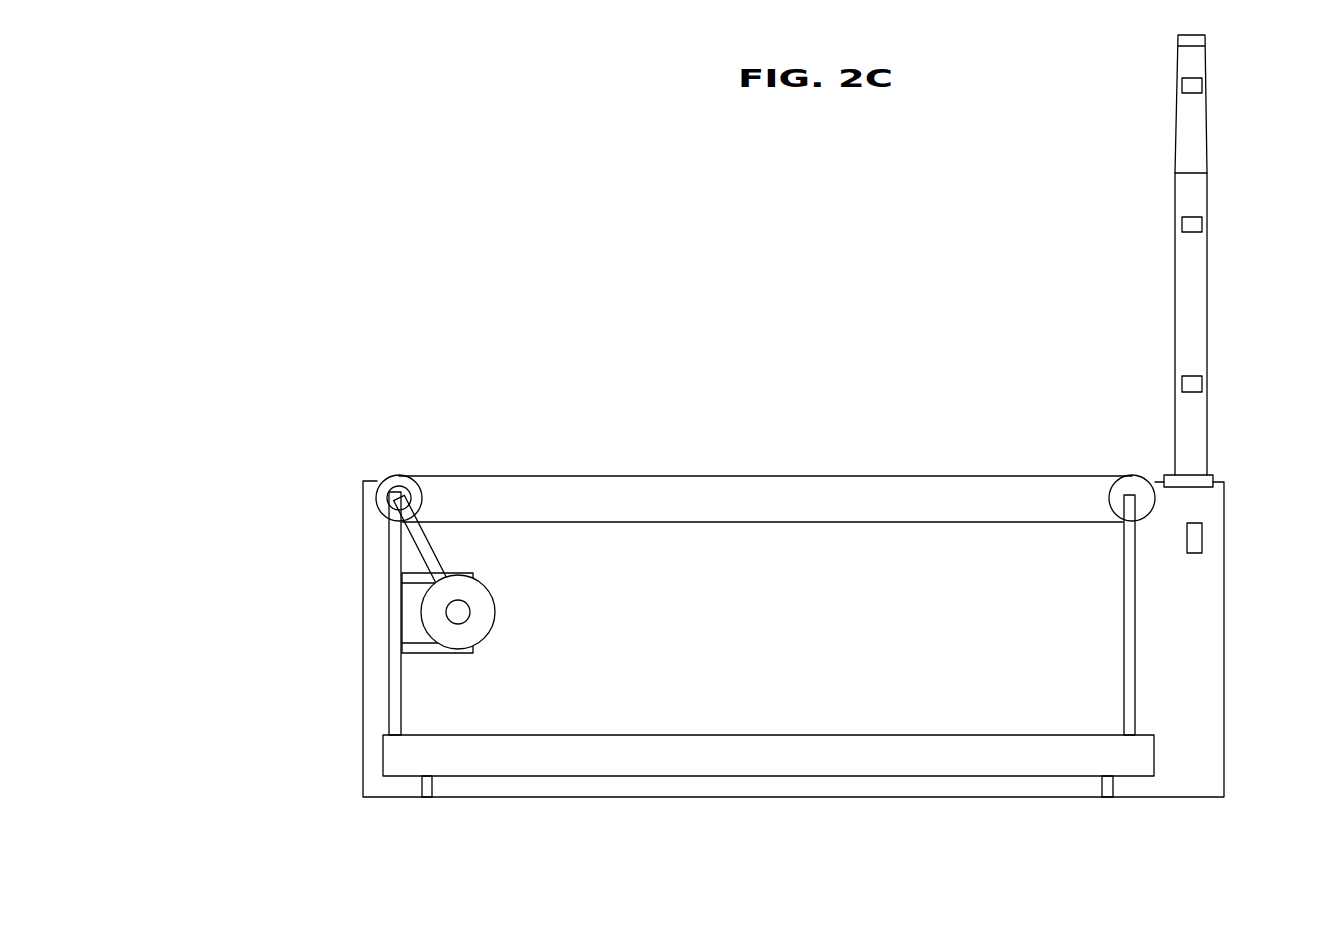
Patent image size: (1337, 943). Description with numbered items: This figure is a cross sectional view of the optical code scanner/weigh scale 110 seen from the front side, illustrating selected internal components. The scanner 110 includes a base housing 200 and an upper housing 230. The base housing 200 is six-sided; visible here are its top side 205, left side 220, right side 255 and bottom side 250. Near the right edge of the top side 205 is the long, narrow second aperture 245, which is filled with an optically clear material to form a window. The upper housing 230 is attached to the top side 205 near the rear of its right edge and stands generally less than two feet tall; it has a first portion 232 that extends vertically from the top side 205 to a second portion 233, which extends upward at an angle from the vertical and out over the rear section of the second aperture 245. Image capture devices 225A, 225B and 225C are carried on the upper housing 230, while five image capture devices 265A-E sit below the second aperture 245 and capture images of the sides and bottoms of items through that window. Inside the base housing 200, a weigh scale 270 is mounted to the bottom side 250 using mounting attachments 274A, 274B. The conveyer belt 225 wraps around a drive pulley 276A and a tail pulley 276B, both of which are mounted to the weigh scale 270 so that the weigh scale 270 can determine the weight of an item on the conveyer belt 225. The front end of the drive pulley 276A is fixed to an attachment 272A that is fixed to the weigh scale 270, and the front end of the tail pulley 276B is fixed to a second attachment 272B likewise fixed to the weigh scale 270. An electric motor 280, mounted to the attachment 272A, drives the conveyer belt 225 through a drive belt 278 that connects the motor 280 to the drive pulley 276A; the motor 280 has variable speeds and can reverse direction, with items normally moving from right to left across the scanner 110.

The optical code scanner/weigh scale 110 is at (572, 181).
The base housing 200 is at (301, 676).
The top side 205 is at (363, 480).
The left side 220 is at (363, 615).
The conveyer belt 225 is at (598, 475).
The image capture device 225A is at (1195, 384).
The image capture device 225B is at (1195, 224).
The image capture device 225C is at (1195, 85).
The upper housing 230 is at (1105, 230).
The first portion 232 is at (1175, 323).
The second portion 233 is at (1175, 115).
The second aperture 245 is at (1212, 475).
The bottom side 250 is at (718, 798).
The right side 255 is at (1225, 697).
The image capture devices 265A-E is at (1197, 533).
The weigh scale 270 is at (400, 757).
The attachment 272A is at (389, 553).
The second attachment 272B is at (1135, 606).
The mounting attachment 274A is at (423, 798).
The mounting attachment 274B is at (1107, 798).
The drive pulley 276A is at (404, 478).
The tail pulley 276B is at (1128, 483).
The drive belt 278 is at (442, 547).
The electric motor 280 is at (480, 622).